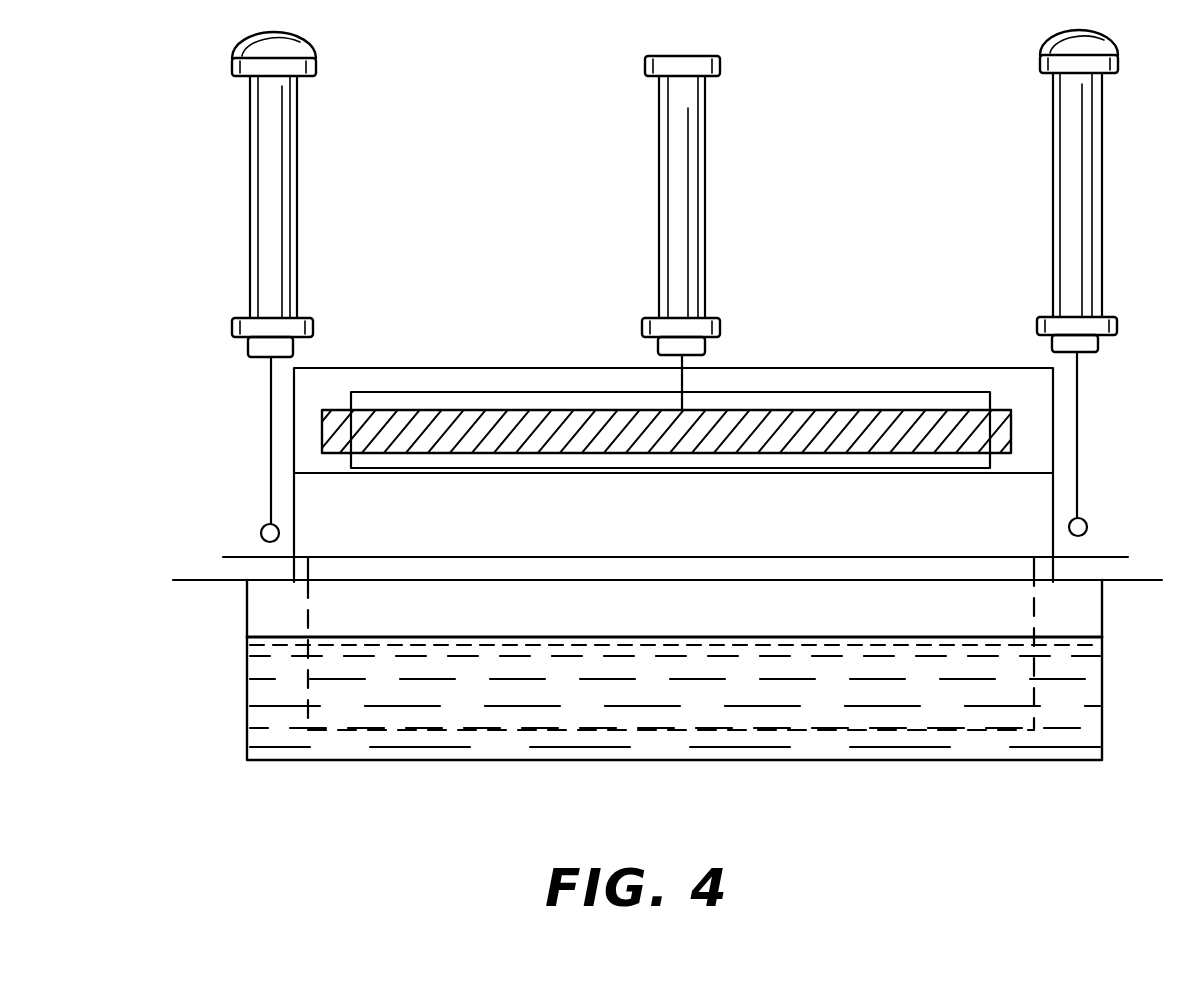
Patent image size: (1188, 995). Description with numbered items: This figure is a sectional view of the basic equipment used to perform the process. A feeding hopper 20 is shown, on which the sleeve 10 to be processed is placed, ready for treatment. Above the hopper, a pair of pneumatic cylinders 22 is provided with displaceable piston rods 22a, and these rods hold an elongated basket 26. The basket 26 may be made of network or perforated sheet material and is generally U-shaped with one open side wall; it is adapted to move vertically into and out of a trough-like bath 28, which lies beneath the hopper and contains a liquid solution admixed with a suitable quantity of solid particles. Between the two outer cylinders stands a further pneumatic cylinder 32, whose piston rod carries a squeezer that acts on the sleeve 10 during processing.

The sleeve 10 is at (960, 402).
The feeding hopper 20 is at (1028, 515).
The pneumatic cylinder 22 is at (270, 227).
The piston rod 22a is at (268, 455).
The basket 26 is at (1100, 690).
The trough-like bath 28 is at (247, 685).
The pneumatic cylinder 32 is at (684, 216).